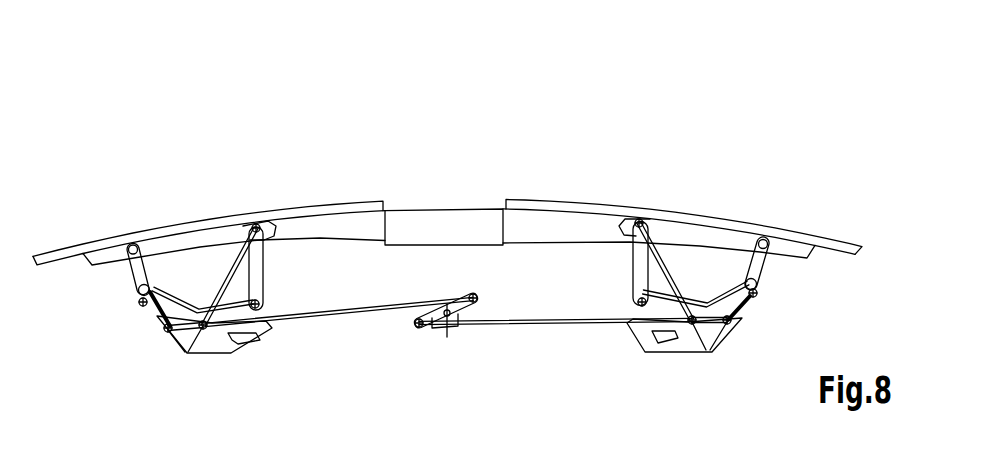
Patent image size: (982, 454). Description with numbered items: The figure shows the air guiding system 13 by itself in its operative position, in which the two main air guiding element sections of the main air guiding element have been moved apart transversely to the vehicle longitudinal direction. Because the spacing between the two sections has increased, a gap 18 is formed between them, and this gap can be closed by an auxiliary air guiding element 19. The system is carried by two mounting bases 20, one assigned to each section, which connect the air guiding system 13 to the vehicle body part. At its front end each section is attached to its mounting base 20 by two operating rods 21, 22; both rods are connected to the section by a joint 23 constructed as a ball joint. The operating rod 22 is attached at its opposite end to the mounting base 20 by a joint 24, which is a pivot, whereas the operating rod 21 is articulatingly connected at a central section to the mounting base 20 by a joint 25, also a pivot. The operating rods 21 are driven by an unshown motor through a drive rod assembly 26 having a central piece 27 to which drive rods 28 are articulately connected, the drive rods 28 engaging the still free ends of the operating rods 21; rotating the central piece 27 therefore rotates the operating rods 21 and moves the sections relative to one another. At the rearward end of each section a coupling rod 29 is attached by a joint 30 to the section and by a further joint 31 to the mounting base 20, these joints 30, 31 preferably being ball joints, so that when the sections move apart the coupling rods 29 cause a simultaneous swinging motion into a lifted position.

The air guiding system 13 is at (447, 187).
The gap 18 is at (482, 197).
The auxiliary air guiding element 19 is at (428, 210).
The mounting base 20 is at (210, 355).
The operating rod 21 is at (131, 276).
The operating rod 22 is at (265, 265).
The joint 23 is at (133, 243).
The joint 24 is at (307, 312).
The joint 25 is at (140, 305).
The drive rod assembly 26 is at (438, 348).
The central piece 27 is at (465, 305).
The drive rod 28 is at (380, 314).
The coupling rod 29 is at (227, 282).
The joint 30 is at (635, 220).
The joint 31 is at (187, 335).